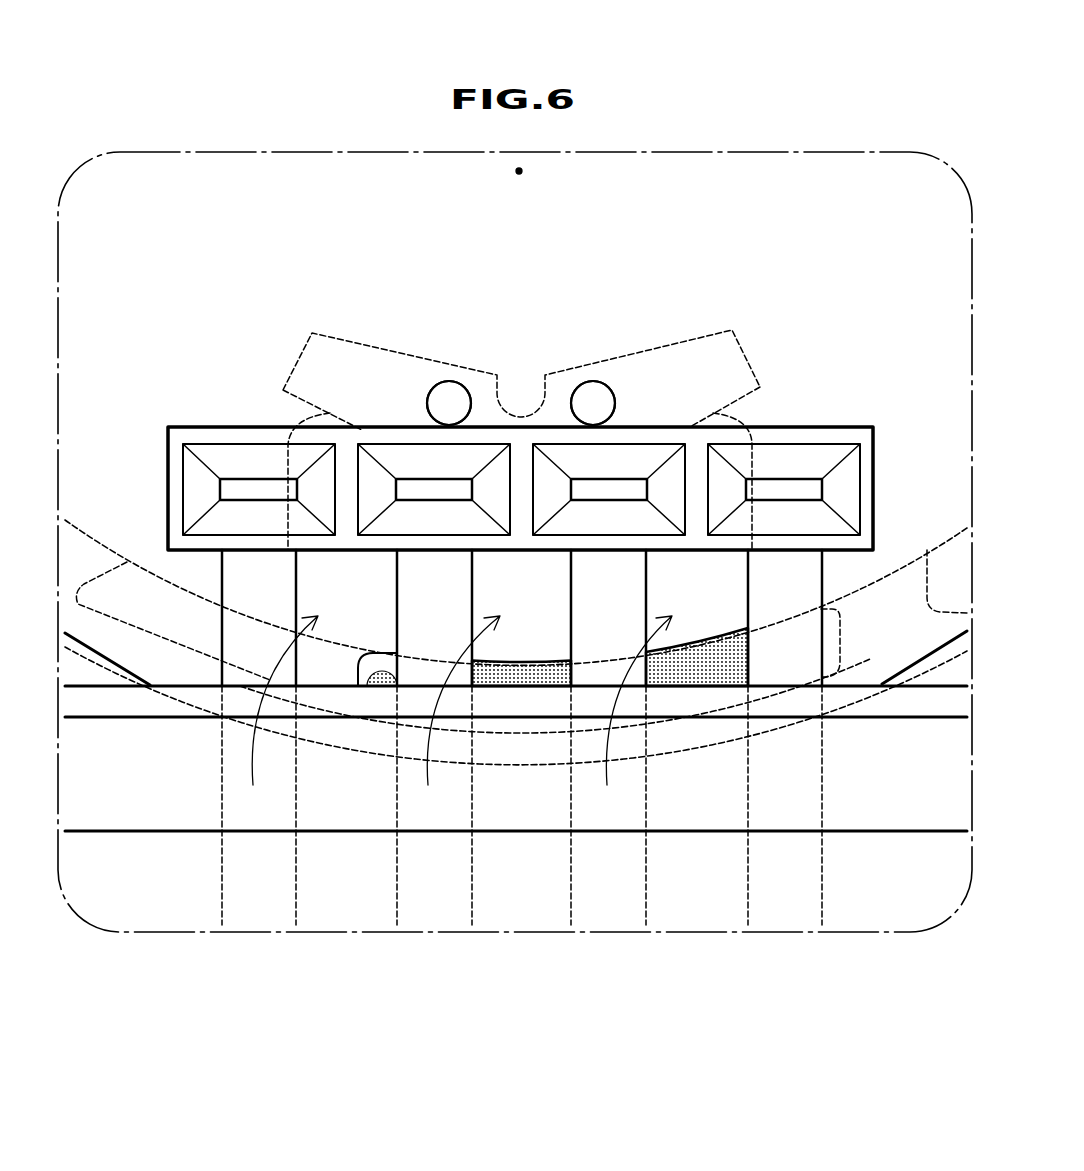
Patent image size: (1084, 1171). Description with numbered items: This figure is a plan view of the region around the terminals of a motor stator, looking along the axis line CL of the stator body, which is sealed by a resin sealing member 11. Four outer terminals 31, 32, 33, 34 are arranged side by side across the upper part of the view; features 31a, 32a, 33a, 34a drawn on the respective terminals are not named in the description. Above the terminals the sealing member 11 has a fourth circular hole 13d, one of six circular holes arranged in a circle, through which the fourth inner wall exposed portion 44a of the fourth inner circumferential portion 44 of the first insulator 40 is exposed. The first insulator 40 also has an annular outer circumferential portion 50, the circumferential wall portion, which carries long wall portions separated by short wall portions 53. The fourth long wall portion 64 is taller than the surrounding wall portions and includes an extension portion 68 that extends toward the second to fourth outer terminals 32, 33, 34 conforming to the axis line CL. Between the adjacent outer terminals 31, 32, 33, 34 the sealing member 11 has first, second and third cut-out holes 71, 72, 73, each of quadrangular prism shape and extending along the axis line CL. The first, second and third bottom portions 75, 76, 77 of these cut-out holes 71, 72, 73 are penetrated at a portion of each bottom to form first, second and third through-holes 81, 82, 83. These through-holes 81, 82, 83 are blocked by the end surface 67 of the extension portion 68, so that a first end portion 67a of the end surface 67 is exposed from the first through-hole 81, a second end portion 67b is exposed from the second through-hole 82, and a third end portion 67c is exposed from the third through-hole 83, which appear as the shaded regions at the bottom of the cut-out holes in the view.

The sealing member 11 is at (784, 216).
The axis line CL is at (522, 174).
The fourth inner circumferential portion 44 is at (352, 336).
The fourth circular hole 13d is at (452, 397).
The fourth inner wall exposed portion 44a is at (455, 403).
The first sensor opening 31a is at (292, 485).
The second sensor opening 32a is at (430, 485).
The third sensor opening 33a is at (600, 487).
The fourth sensor opening 34a is at (778, 482).
The first outer terminal 31 is at (268, 597).
The second outer terminal 32 is at (445, 597).
The third outer terminal 33 is at (617, 597).
The fourth outer terminal 34 is at (785, 597).
The first bottom portion 75 is at (368, 581).
The second bottom portion 76 is at (541, 581).
The third bottom portion 77 is at (713, 581).
The short wall portion 53 is at (93, 578).
The outer circumferential portion 50 is at (874, 638).
The first insulator 40 is at (898, 590).
The end surface 67 is at (551, 736).
The extension portion 68 is at (496, 752).
The fourth long wall portion 64 is at (555, 727).
The first through-hole 81 is at (378, 660).
The second through-hole 82 is at (546, 674).
The third through-hole 83 is at (723, 654).
The first cut-out hole 71 is at (279, 720).
The second cut-out hole 72 is at (459, 720).
The third cut-out hole 73 is at (632, 720).
The first end portion 67a is at (378, 680).
The second end portion 67b is at (520, 680).
The third end portion 67c is at (687, 673).